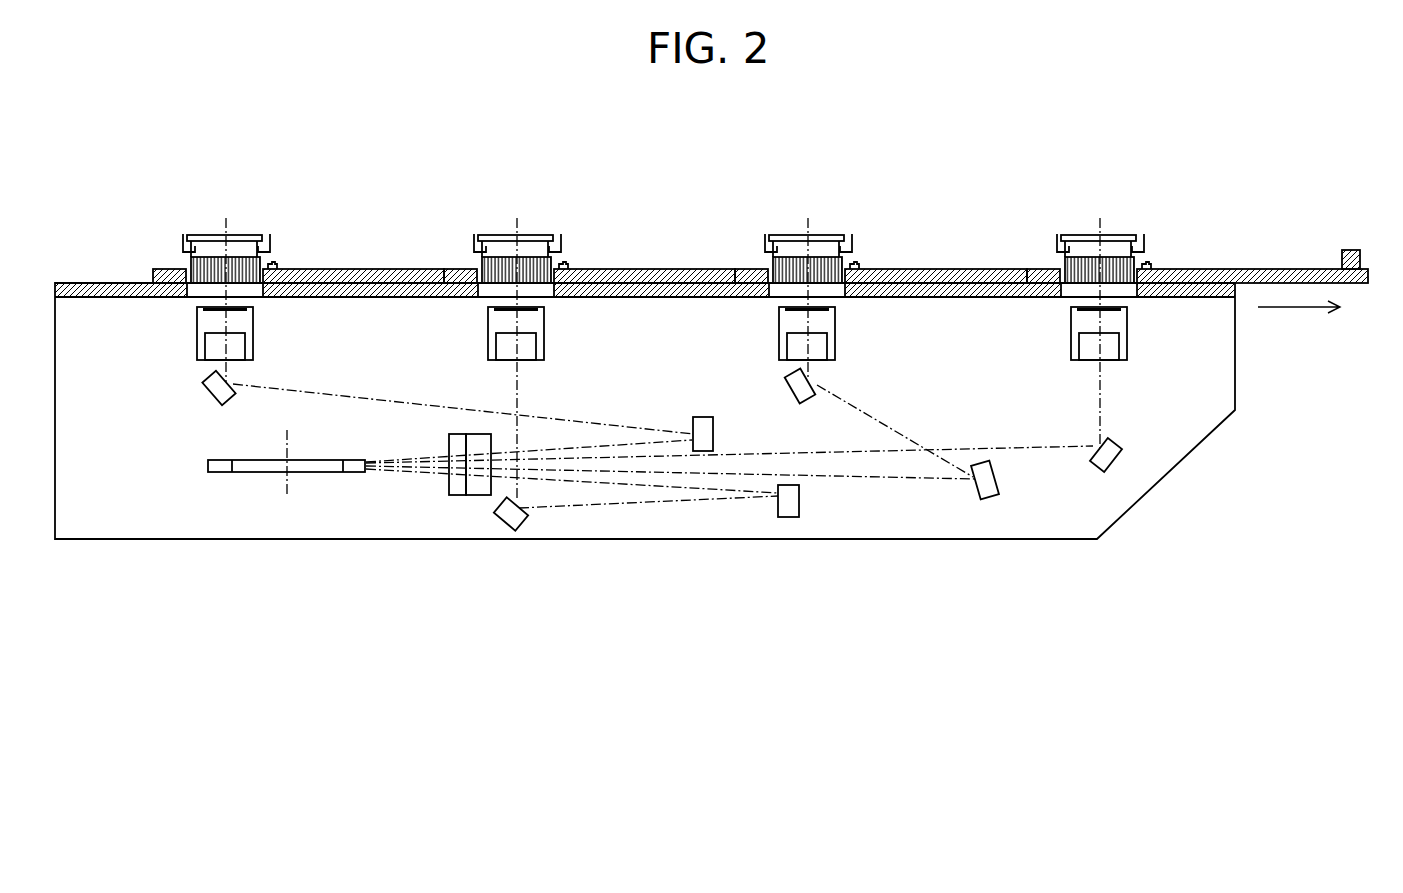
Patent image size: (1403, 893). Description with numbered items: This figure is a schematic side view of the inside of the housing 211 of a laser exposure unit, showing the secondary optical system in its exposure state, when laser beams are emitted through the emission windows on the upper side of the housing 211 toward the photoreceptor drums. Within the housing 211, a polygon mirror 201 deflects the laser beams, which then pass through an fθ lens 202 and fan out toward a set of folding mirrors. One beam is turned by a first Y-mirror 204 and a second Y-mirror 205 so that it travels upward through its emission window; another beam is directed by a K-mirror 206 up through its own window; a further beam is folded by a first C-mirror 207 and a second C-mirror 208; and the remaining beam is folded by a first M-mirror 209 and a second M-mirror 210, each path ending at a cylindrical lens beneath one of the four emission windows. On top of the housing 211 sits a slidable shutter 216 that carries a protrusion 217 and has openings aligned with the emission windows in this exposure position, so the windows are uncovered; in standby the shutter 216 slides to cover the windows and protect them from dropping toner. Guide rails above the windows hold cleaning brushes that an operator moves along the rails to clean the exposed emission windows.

The polygon mirror 201 is at (260, 473).
The fθ lens 202 is at (448, 482).
The first Y-mirror 204 is at (703, 417).
The second Y-mirror 205 is at (207, 400).
The K-mirror 206 is at (1119, 438).
The first C-mirror 207 is at (998, 480).
The second C-mirror 208 is at (788, 396).
The first M-mirror 209 is at (800, 500).
The second M-mirror 210 is at (510, 531).
The housing 211 is at (1152, 485).
The shutter 216 is at (1300, 268).
The protrusion 217 is at (1355, 252).